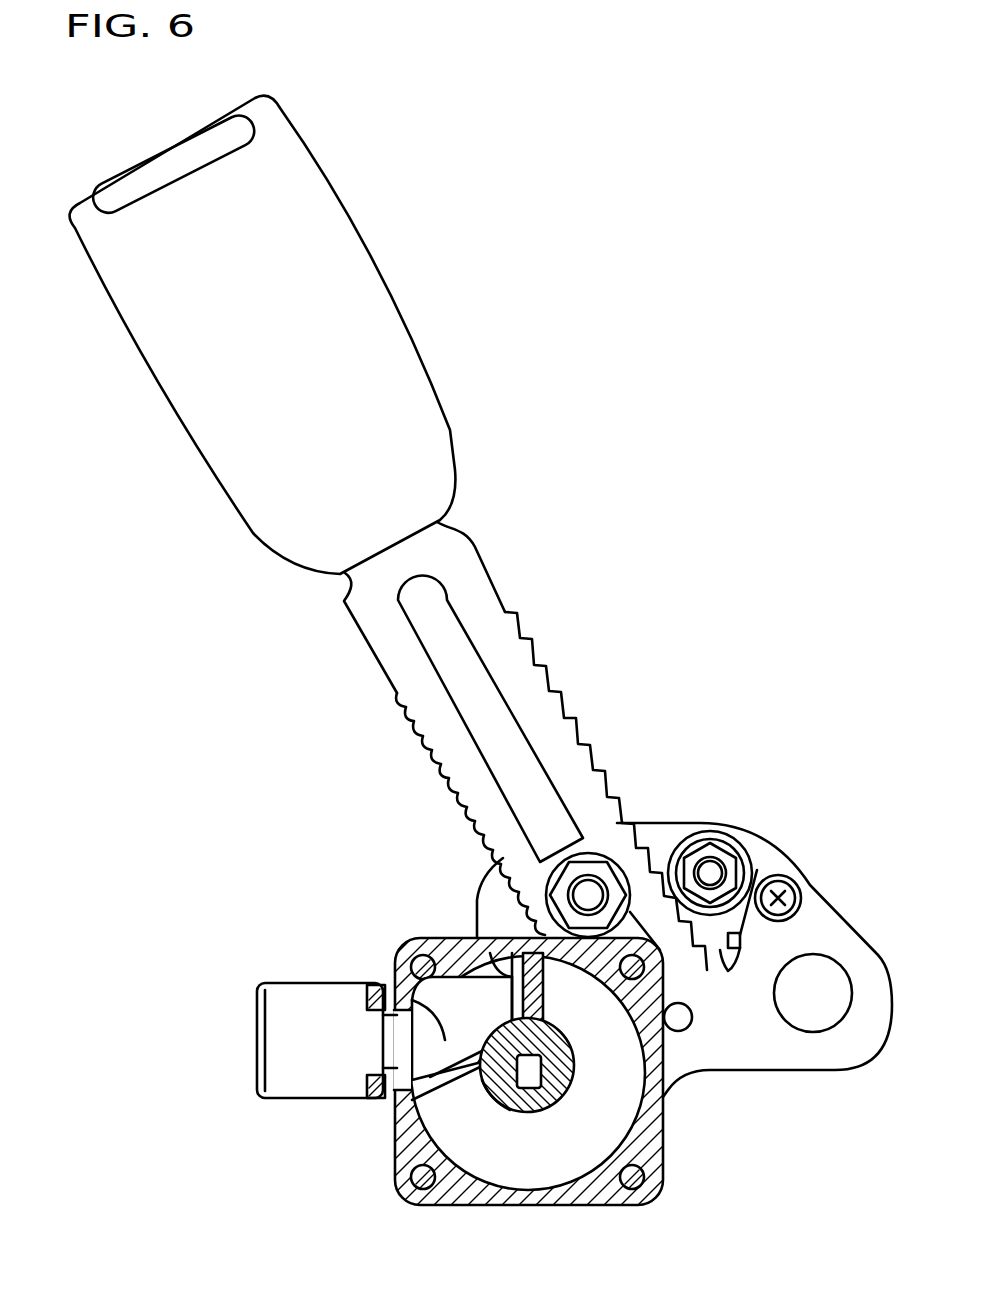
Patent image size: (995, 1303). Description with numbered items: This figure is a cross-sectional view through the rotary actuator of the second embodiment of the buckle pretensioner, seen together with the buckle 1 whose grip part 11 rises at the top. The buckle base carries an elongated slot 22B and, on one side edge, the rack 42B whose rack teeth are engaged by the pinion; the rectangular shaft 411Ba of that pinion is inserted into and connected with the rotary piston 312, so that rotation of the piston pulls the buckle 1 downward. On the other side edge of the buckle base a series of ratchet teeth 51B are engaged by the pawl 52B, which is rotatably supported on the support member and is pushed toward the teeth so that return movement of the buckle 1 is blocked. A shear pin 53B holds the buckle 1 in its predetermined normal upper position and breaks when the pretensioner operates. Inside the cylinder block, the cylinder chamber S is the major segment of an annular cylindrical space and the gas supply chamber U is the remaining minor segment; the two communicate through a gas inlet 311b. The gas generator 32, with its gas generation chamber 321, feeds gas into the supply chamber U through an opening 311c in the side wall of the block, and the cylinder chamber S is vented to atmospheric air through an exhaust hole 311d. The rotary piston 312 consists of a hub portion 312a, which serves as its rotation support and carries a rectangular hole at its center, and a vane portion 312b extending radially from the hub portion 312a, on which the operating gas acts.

The buckle 1 is at (490, 545).
The handle grip 11 is at (405, 364).
The elongated slot 22B is at (473, 642).
The rack 42B is at (402, 690).
The ratchet teeth 51B is at (583, 752).
The pawl 52B is at (728, 972).
The shear pin 53B is at (690, 1027).
The gas generator 32 is at (302, 978).
The gas generation chamber 321 is at (367, 1008).
The gas inlet 311b is at (477, 937).
The opening 311c is at (365, 1046).
The exhaust hole 311d is at (400, 1112).
The rotary piston 312 is at (570, 1056).
The hub portion 312a is at (527, 1112).
The vane portion 312b is at (546, 978).
The rectangular shaft 411Ba is at (572, 1095).
The cylinder chamber S is at (478, 1162).
The gas supply chamber U is at (397, 1047).